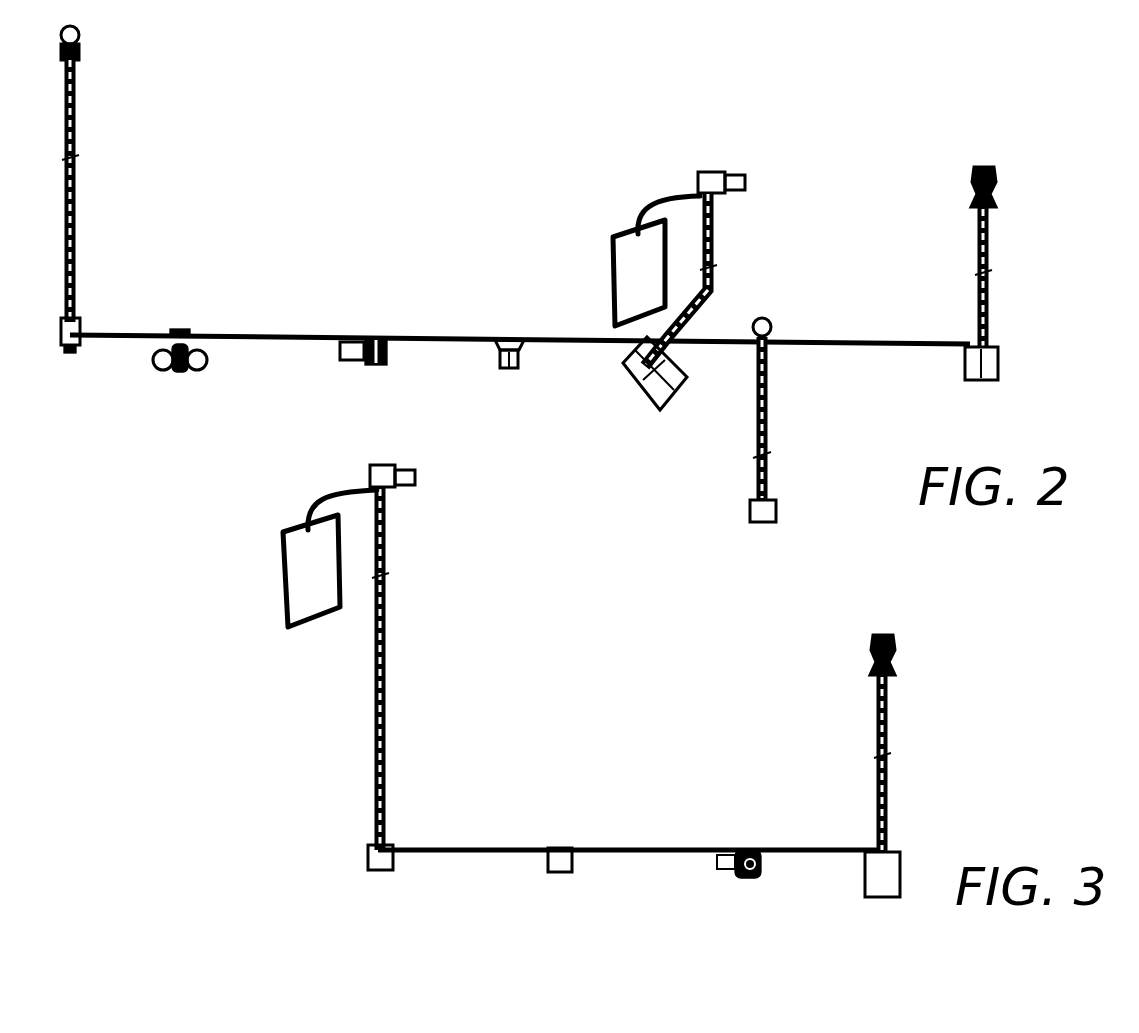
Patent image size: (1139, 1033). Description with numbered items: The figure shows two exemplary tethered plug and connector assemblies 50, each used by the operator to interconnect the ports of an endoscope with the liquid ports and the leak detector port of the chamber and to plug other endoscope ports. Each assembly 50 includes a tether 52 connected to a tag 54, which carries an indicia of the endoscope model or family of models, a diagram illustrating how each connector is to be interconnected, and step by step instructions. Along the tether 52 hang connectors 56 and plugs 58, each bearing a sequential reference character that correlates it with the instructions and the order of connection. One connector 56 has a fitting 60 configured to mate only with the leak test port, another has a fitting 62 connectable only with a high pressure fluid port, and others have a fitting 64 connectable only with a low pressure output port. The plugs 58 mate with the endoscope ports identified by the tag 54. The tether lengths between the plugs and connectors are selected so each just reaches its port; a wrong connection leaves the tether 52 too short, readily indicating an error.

In FIG. 2, the tethered plug and connector assembly 50 is at (318, 128).
In FIG. 3, the tethered plug and connector assembly 50 is at (660, 588).
In FIG. 2, the tether 52 is at (328, 280).
In FIG. 3, the tether 52 is at (530, 805).
In FIG. 2, the tag 54 is at (612, 262).
In FIG. 3, the tag 54 is at (286, 572).
In FIG. 2, the connector 56 is at (80, 238).
In FIG. 3, the connector 56 is at (390, 722).
In FIG. 2, the plug 58 is at (210, 368).
In FIG. 3, the plug 58 is at (572, 868).
In FIG. 2, the fitting 60 is at (996, 172).
In FIG. 3, the fitting 60 is at (896, 640).
In FIG. 2, the fitting 62 is at (80, 33).
In FIG. 2, the fitting 64 is at (722, 170).
In FIG. 3, the fitting 64 is at (407, 488).